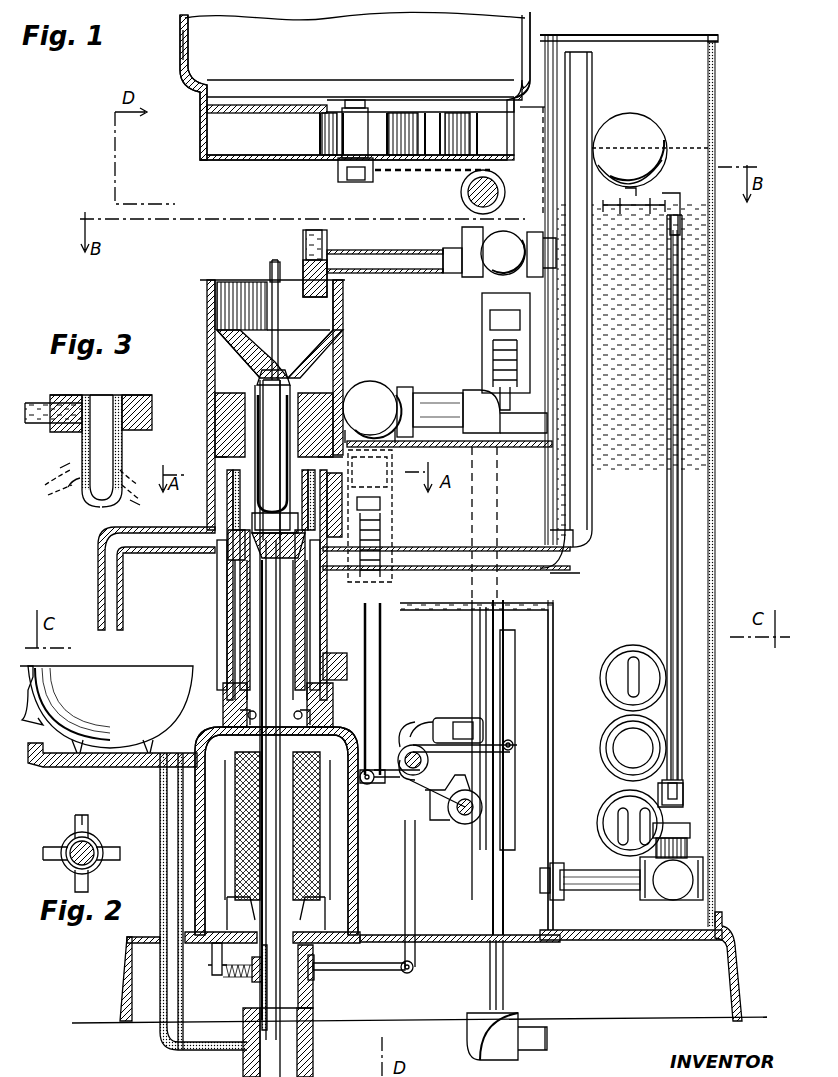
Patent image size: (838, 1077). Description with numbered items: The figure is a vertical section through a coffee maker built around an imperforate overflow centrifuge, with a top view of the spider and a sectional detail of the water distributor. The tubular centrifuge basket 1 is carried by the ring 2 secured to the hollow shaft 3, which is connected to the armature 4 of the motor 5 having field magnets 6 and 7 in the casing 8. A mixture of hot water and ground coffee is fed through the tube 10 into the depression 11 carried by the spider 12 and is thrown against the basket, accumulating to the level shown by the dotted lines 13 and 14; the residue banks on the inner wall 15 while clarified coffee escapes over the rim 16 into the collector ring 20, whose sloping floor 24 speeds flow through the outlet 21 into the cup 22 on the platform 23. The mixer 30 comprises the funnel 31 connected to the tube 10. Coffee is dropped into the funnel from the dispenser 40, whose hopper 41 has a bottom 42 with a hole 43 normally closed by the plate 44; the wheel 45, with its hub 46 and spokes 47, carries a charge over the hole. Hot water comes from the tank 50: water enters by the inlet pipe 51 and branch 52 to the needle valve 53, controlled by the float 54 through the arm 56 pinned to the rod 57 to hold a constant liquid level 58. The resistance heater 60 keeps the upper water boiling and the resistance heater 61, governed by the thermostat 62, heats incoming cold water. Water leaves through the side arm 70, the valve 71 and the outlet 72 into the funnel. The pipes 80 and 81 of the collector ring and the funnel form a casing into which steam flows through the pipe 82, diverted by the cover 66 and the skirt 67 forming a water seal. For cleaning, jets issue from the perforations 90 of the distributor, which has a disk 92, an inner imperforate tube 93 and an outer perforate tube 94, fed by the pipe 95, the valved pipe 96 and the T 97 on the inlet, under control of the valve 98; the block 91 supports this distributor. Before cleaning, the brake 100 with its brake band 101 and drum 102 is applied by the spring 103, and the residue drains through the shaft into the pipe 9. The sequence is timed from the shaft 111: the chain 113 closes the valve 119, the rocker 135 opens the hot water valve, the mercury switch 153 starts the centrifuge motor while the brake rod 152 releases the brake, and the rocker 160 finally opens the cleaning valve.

In FIG. 1, the centrifuge basket 1 is at (232, 482).
In FIG. 1, the ring 2 is at (320, 542).
In FIG. 1, the hollow shaft 3 is at (235, 619).
In FIG. 1, the armature 4 is at (318, 877).
In FIG. 1, the motor 5 is at (190, 856).
In FIG. 1, the field magnet 6 is at (222, 892).
In FIG. 1, the field magnet 7 is at (345, 907).
In FIG. 1, the casing 8 is at (163, 789).
In FIG. 1, the pipe 9 is at (315, 1042).
In FIG. 1, the tube 10 is at (295, 410).
In FIG. 2, the depression 11 is at (75, 862).
In FIG. 1, the spider 12 is at (225, 542).
In FIG. 2, the spider 12 is at (90, 824).
In FIG. 1, the dotted line 13 is at (236, 507).
In FIG. 1, the dotted line 14 is at (360, 464).
In FIG. 1, the inner wall 15 is at (382, 517).
In FIG. 1, the rim 16 is at (245, 470).
In FIG. 1, the collector ring 20 is at (222, 464).
In FIG. 1, the outlet pipe 21 is at (110, 547).
In FIG. 1, the cup 22 is at (106, 709).
In FIG. 1, the platform 23 is at (163, 752).
In FIG. 1, the sloping floor 24 is at (385, 499).
In FIG. 1, the mixer 30 is at (220, 285).
In FIG. 1, the funnel 31 is at (215, 302).
In FIG. 1, the dispenser 40 is at (172, 48).
In FIG. 1, the hopper 41 is at (188, 66).
In FIG. 1, the bottom 42 is at (400, 160).
In FIG. 1, the hole 43 is at (207, 160).
In FIG. 1, the plate 44 is at (255, 105).
In FIG. 1, the wheel 45 is at (375, 110).
In FIG. 1, the hub 46 is at (340, 110).
In FIG. 1, the spokes 47 is at (475, 112).
In FIG. 1, the tank 50 is at (715, 334).
In FIG. 1, the water inlet pipe 51 is at (540, 1052).
In FIG. 1, the branch 52 is at (548, 870).
In FIG. 1, the needle valve 53 is at (700, 870).
In FIG. 1, the float 54 is at (630, 120).
In FIG. 1, the arm 56 is at (672, 212).
In FIG. 1, the rod 57 is at (716, 520).
In FIG. 1, the liquid level 58 is at (678, 150).
In FIG. 1, the resistance heater 60 is at (660, 685).
In FIG. 1, the resistance heater 61 is at (688, 810).
In FIG. 1, the thermostat 62 is at (660, 741).
In FIG. 1, the cover 66 is at (618, 35).
In FIG. 1, the skirt 67 is at (715, 65).
In FIG. 1, the side arm 70 is at (400, 270).
In FIG. 1, the valve 71 is at (499, 318).
In FIG. 1, the outlet 72 is at (303, 258).
In FIG. 1, the pipe 80 is at (330, 630).
In FIG. 1, the pipe 81 is at (345, 347).
In FIG. 1, the steam pipe 82 is at (590, 308).
In FIG. 1, the perforations 90 is at (215, 407).
In FIG. 3, the perforations 90 is at (73, 499).
In FIG. 3, the block 91 is at (148, 395).
In FIG. 3, the disk 92 is at (56, 395).
In FIG. 3, the inner imperforate tube 93 is at (83, 450).
In FIG. 3, the outer perforate tube 94 is at (118, 450).
In FIG. 1, the pipe 95 is at (253, 400).
In FIG. 3, the pipe 95 is at (33, 400).
In FIG. 1, the valved pipe 96 is at (440, 395).
In FIG. 1, the T 97 is at (505, 838).
In FIG. 1, the valve 98 is at (378, 385).
In FIG. 1, the brake 100 is at (305, 992).
In FIG. 1, the brake band 101 is at (313, 984).
In FIG. 1, the drum 102 is at (250, 987).
In FIG. 1, the spring 103 is at (238, 982).
In FIG. 1, the shaft 111 is at (455, 822).
In FIG. 1, the chain 113 is at (465, 177).
In FIG. 1, the valve 119 is at (278, 322).
In FIG. 1, the rocker 135 is at (420, 755).
In FIG. 1, the brake rod 152 is at (403, 972).
In FIG. 1, the mercury switch 153 is at (505, 659).
In FIG. 1, the rocker 160 is at (381, 782).